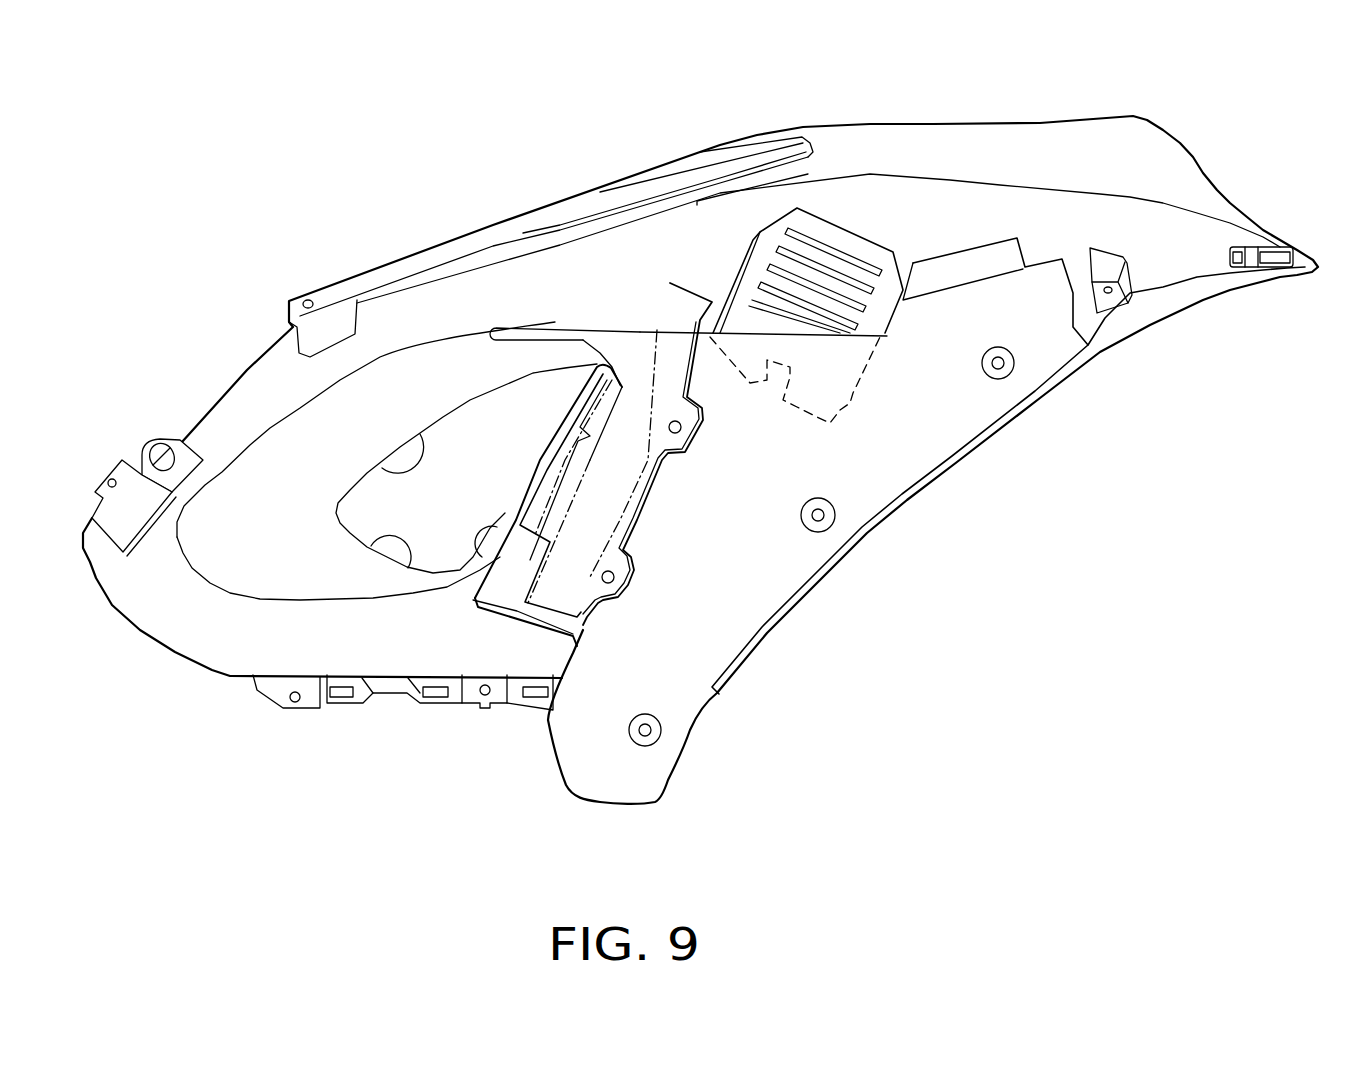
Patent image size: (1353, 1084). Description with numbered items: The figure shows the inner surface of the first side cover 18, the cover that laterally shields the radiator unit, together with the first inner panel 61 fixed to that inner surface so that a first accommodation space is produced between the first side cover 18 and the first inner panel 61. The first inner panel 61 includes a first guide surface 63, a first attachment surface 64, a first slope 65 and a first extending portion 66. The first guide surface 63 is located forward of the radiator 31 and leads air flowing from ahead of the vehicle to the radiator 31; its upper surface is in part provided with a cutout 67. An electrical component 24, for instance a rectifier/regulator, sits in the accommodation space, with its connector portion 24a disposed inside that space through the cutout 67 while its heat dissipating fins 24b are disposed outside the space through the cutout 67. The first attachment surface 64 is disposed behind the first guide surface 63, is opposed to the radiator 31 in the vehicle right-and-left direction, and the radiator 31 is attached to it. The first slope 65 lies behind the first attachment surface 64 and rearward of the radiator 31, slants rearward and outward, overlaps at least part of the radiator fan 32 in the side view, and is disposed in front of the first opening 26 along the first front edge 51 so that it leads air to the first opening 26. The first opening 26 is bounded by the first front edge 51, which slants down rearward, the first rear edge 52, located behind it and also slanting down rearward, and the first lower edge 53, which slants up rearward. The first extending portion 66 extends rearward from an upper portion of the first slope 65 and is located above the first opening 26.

The first side cover 18 is at (1003, 147).
The electrical component 24 is at (863, 237).
The connector portion 24a is at (847, 413).
The heat dissipating fins 24b is at (830, 240).
The first opening 26 is at (352, 508).
The radiator 31 is at (660, 310).
The radiator fan 32 is at (605, 322).
The first front edge 51 is at (487, 540).
The first rear edge 52 is at (417, 435).
The first lower edge 53 is at (407, 567).
The first inner panel 61 is at (880, 470).
The first guide surface 63 is at (785, 555).
The first attachment surface 64 is at (617, 473).
The first slope 65 is at (510, 573).
The first extending portion 66 is at (547, 322).
The cutout 67 is at (745, 333).